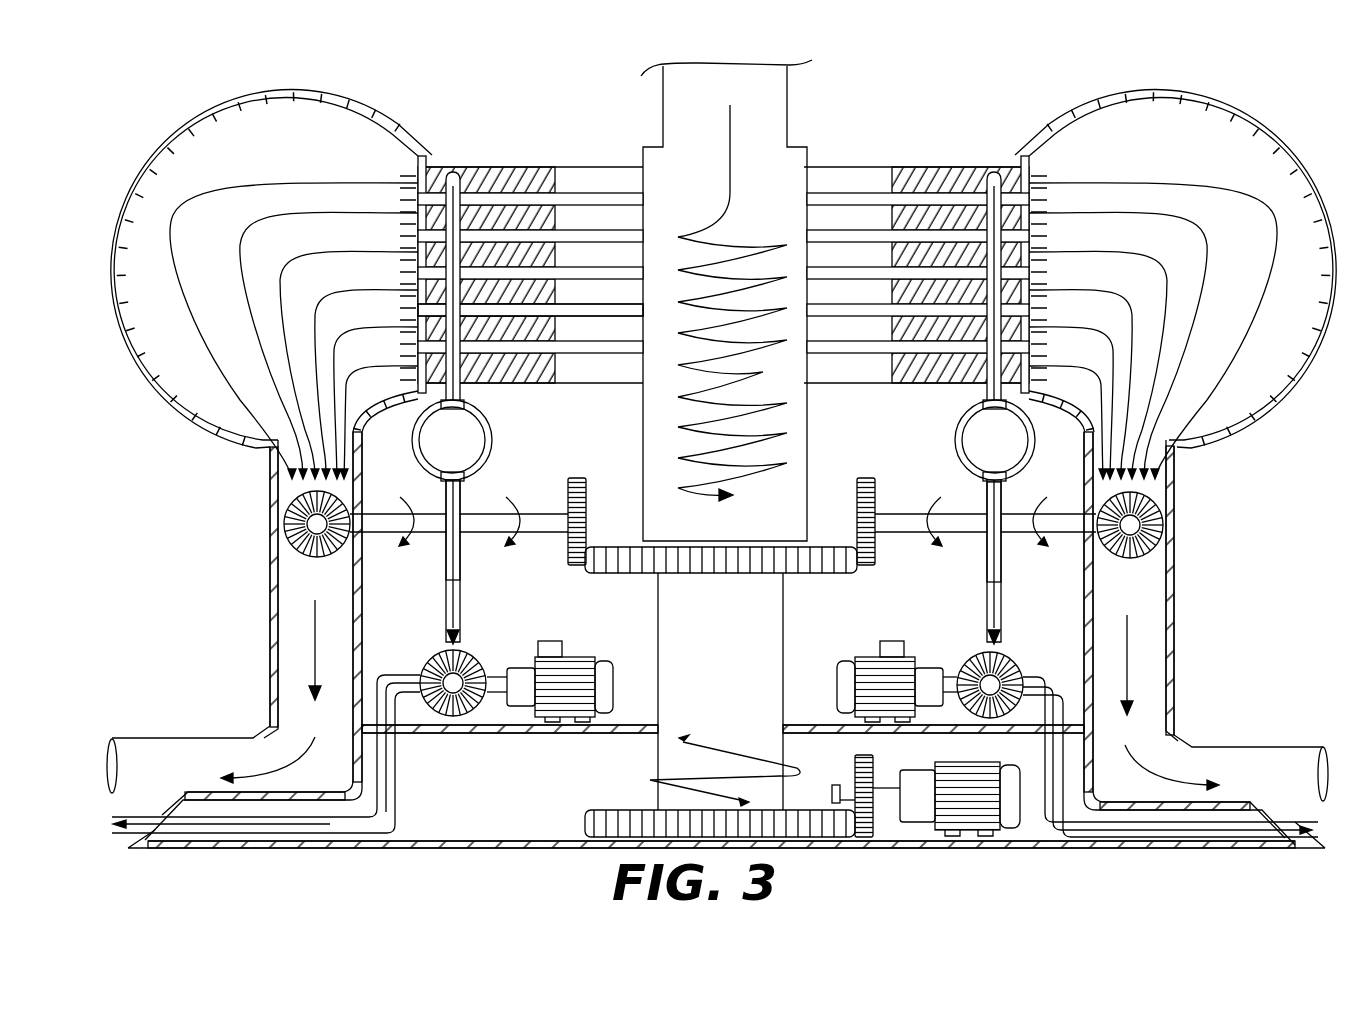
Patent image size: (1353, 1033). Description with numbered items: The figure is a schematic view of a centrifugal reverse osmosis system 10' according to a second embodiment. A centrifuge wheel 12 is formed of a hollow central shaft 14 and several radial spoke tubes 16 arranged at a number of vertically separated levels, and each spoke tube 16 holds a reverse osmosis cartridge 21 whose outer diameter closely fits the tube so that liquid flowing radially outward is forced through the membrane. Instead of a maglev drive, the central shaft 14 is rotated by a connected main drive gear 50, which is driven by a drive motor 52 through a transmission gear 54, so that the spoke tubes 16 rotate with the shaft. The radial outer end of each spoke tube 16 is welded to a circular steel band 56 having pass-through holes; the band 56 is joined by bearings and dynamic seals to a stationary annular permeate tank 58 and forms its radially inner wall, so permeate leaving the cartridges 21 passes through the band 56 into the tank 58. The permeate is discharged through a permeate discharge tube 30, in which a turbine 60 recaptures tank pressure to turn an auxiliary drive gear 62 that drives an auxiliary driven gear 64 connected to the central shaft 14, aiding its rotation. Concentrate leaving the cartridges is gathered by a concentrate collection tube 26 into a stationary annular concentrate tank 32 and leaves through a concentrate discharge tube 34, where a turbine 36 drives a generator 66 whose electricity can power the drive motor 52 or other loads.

The centrifugal reverse osmosis system 10' is at (1028, 47).
The centrifuge wheel 12 is at (919, 132).
The central shaft 14 is at (790, 112).
The spoke tubes 16 is at (493, 167).
The reverse osmosis cartridge 21 is at (553, 215).
The concentrate collection tube 26 is at (470, 325).
The permeate discharge tube 30 is at (268, 632).
The concentrate tank 32 is at (492, 430).
The concentrate discharge tube 34 is at (462, 570).
The turbine 36 is at (435, 718).
The main drive gear 50 is at (785, 840).
The drive motor 52 is at (990, 832).
The transmission gear 54 is at (878, 840).
The band 56 is at (405, 262).
The annular permeate tank 58 is at (168, 165).
The turbine 60 is at (287, 512).
The auxiliary drive gear 62 is at (582, 478).
The auxiliary driven gear 64 is at (680, 575).
The generator 66 is at (592, 724).